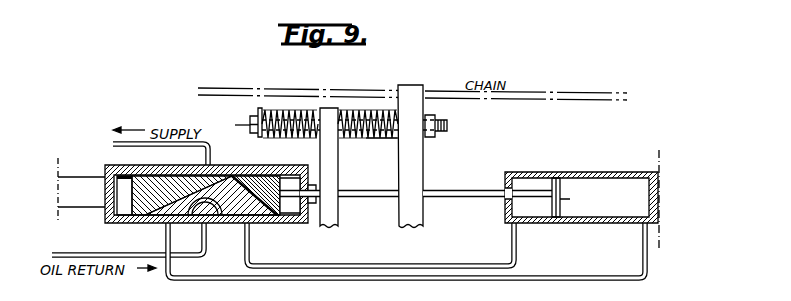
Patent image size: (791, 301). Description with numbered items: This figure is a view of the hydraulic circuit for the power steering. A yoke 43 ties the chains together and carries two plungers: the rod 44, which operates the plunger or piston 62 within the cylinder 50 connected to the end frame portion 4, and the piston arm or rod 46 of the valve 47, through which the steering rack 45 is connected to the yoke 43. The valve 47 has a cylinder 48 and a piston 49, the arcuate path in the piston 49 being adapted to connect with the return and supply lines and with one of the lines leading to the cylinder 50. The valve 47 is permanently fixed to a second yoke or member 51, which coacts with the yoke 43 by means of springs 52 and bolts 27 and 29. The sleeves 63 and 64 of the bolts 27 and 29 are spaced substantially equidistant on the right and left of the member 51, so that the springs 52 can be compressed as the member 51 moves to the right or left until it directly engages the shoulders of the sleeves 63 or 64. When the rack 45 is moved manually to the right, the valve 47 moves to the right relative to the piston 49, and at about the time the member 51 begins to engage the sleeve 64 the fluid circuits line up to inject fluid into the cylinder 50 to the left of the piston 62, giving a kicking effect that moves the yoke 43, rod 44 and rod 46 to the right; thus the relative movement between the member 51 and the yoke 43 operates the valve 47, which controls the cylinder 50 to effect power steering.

The end frame portion 4 is at (663, 167).
The bolt 27 is at (249, 124).
The bolt 29 is at (436, 118).
The yoke 43 is at (412, 157).
The rod 44 is at (452, 197).
The rack 45 is at (75, 198).
The piston arm or rod 46 is at (360, 197).
The valve 47 is at (227, 165).
The cylinder 48 is at (150, 221).
The piston 49 is at (273, 224).
The cylinder 50 is at (590, 172).
The second yoke or member 51 is at (330, 160).
The springs 52 is at (360, 110).
The plunger or piston 62 is at (571, 224).
The sleeve 63 is at (287, 116).
The sleeve 64 is at (372, 138).